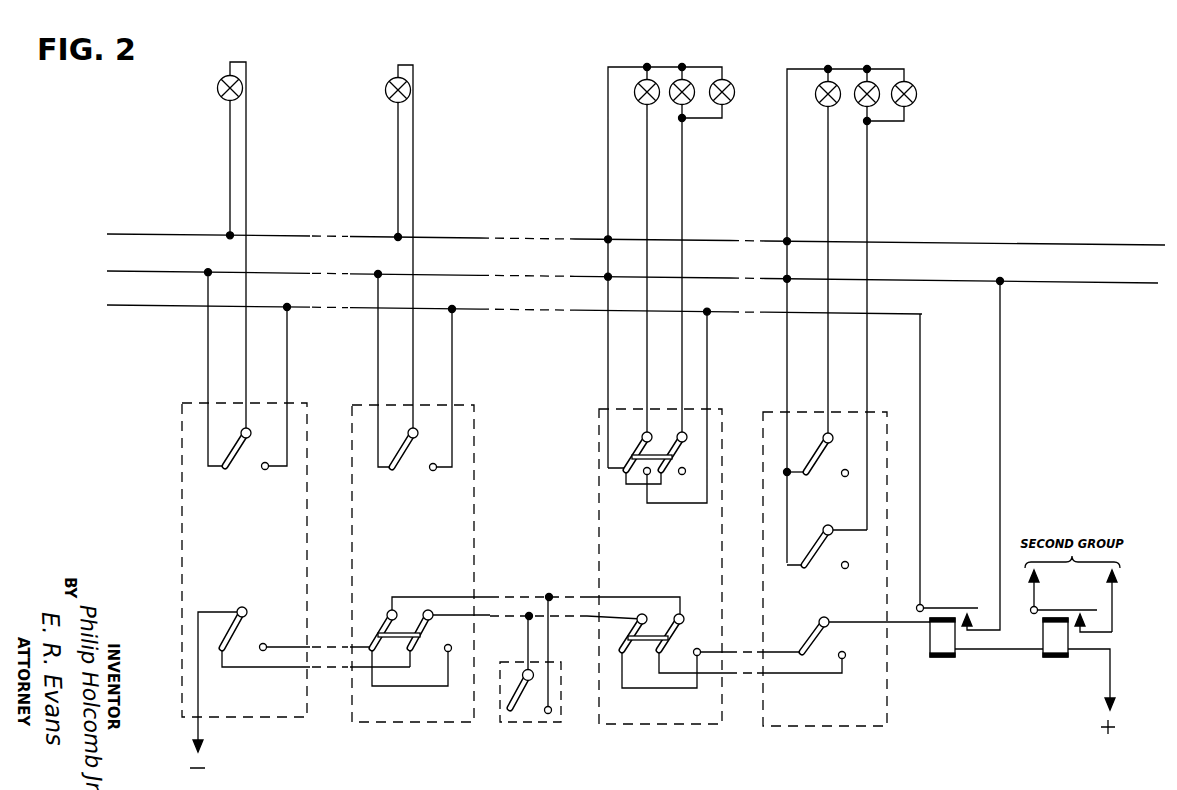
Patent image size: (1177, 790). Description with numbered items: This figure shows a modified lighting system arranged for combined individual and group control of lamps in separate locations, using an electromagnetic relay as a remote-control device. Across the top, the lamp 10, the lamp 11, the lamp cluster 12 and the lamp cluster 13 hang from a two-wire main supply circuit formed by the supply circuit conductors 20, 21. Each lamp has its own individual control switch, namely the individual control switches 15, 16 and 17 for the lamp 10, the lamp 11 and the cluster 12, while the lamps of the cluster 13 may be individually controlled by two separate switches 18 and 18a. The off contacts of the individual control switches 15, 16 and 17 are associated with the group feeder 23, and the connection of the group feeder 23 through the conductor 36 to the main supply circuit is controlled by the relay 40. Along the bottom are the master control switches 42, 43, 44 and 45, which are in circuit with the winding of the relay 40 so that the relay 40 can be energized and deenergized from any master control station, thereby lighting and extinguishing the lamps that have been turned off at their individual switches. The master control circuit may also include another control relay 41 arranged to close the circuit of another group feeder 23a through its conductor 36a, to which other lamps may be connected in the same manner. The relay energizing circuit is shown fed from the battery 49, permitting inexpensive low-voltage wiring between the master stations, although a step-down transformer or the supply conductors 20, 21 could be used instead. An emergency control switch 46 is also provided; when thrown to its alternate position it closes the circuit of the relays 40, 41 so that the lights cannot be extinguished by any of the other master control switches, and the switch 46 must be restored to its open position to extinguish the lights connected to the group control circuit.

The lamp 10 is at (217, 87).
The lamp 11 is at (385, 89).
The lamp cluster 12 is at (716, 80).
The lamp cluster 13 is at (898, 82).
The individual control switch 15 is at (239, 450).
The individual control switch 16 is at (406, 452).
The individual control switch 17 is at (671, 450).
The individual control switch 18 is at (818, 466).
The individual control switch 18a is at (815, 557).
The supply circuit conductor 20 is at (272, 232).
The supply circuit conductor 21 is at (270, 271).
The group feeder 23 is at (265, 305).
The group feeder 23a is at (1036, 597).
The conductor 36 is at (1001, 426).
The conductor 36a is at (1114, 597).
The relay 40 is at (936, 644).
The control relay 41 is at (1050, 648).
The master control switch 42 is at (250, 613).
The master control switch 43 is at (425, 611).
The master control switch 44 is at (668, 632).
The master control switch 45 is at (812, 646).
The emergency control switch 46 is at (521, 684).
The battery 49 is at (1104, 710).